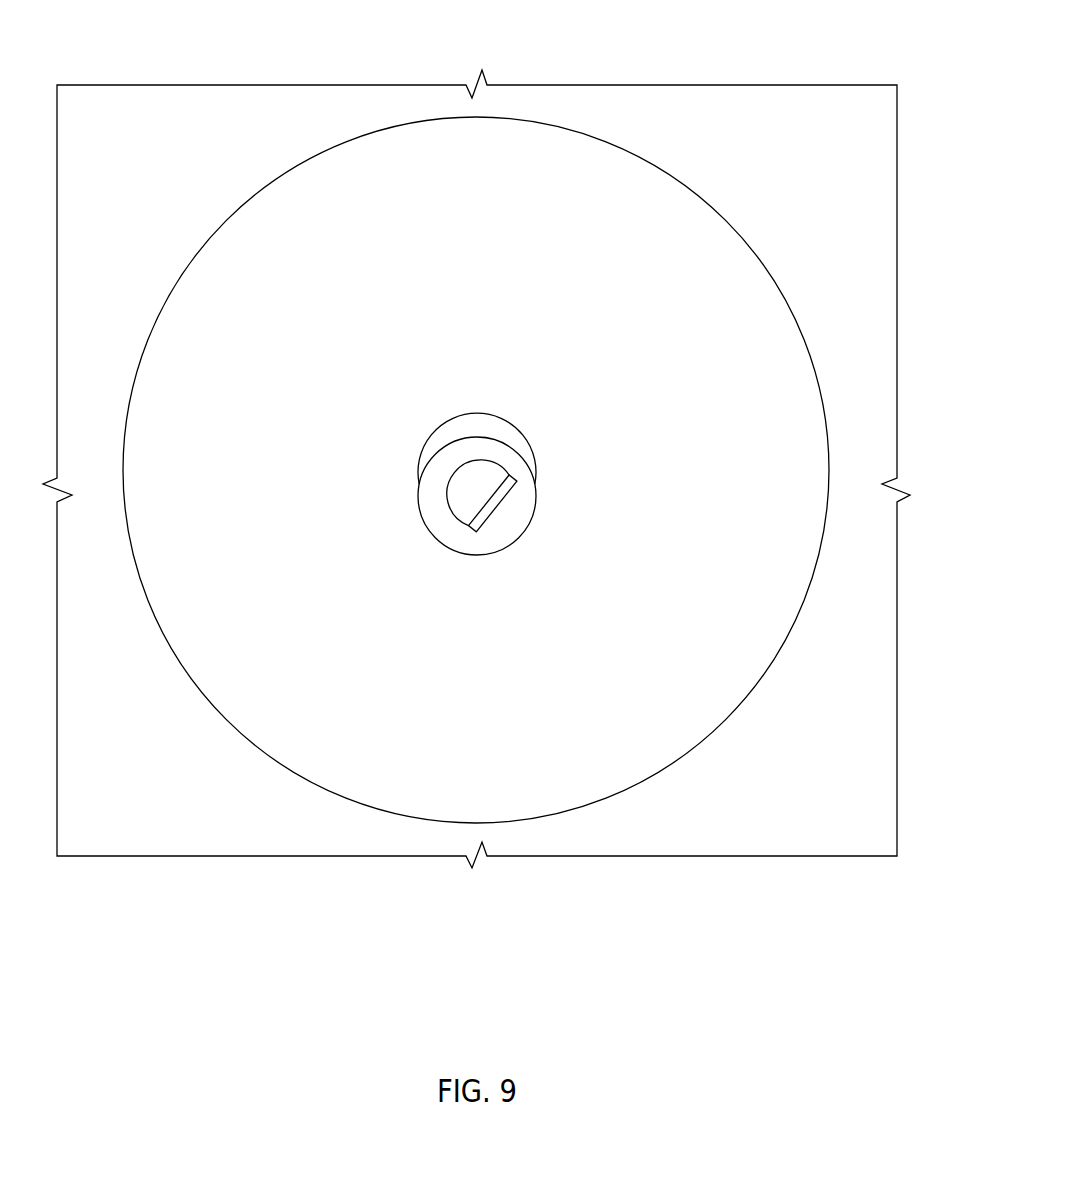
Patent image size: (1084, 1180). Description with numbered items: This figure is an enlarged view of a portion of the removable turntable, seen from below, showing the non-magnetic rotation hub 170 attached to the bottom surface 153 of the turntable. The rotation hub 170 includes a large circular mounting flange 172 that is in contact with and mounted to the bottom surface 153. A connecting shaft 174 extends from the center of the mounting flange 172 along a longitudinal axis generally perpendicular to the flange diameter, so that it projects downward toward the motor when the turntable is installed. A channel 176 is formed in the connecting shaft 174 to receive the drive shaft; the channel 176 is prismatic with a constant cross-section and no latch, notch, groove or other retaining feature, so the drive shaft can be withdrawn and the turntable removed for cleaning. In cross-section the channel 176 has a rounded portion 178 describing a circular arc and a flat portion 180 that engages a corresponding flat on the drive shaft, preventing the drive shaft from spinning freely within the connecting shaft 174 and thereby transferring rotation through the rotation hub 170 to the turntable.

The bottom surface 153 is at (147, 758).
The non-magnetic rotation hub 170 is at (727, 138).
The mounting flange 172 is at (787, 367).
The connecting shaft 174 is at (493, 428).
The channel 176 is at (467, 495).
The rounded portion 178 is at (502, 462).
The flat portion 180 is at (473, 530).